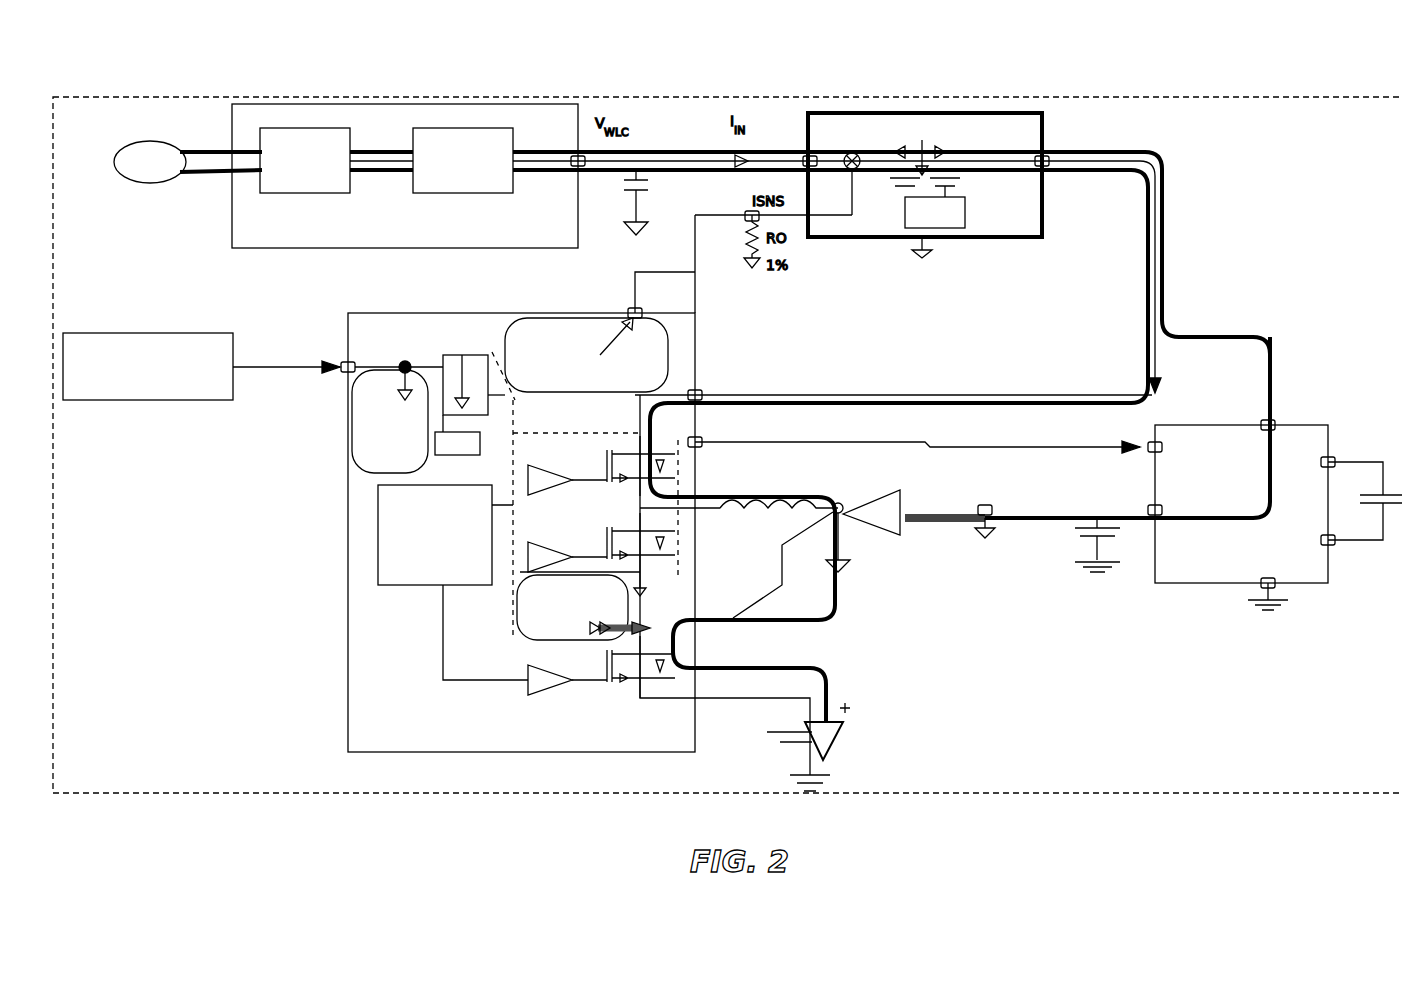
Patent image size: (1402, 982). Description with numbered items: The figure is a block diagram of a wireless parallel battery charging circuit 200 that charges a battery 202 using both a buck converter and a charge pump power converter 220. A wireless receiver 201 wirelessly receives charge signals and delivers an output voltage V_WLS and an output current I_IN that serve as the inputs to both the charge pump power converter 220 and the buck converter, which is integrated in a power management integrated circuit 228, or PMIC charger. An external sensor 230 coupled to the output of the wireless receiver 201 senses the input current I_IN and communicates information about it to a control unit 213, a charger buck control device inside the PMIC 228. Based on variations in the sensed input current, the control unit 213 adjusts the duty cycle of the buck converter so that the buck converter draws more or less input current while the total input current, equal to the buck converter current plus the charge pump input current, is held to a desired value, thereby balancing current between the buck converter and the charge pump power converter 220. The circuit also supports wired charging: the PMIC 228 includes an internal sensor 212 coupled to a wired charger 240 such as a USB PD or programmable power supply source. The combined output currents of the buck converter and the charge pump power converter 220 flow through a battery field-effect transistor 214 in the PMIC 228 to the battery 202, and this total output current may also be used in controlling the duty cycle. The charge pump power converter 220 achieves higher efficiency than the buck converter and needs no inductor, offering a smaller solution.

The wireless parallel battery charging circuit 200 is at (645, 70).
The wireless receiver 201 is at (450, 97).
The external sensor 230 is at (943, 108).
The wired charger 240 is at (170, 333).
The internal sensor 212 is at (455, 350).
The control unit 213 is at (378, 525).
The power management integrated circuit 228 is at (398, 659).
The battery field-effect transistor 214 is at (600, 682).
The battery 202 is at (845, 735).
The charge pump power converter 220 is at (1330, 432).